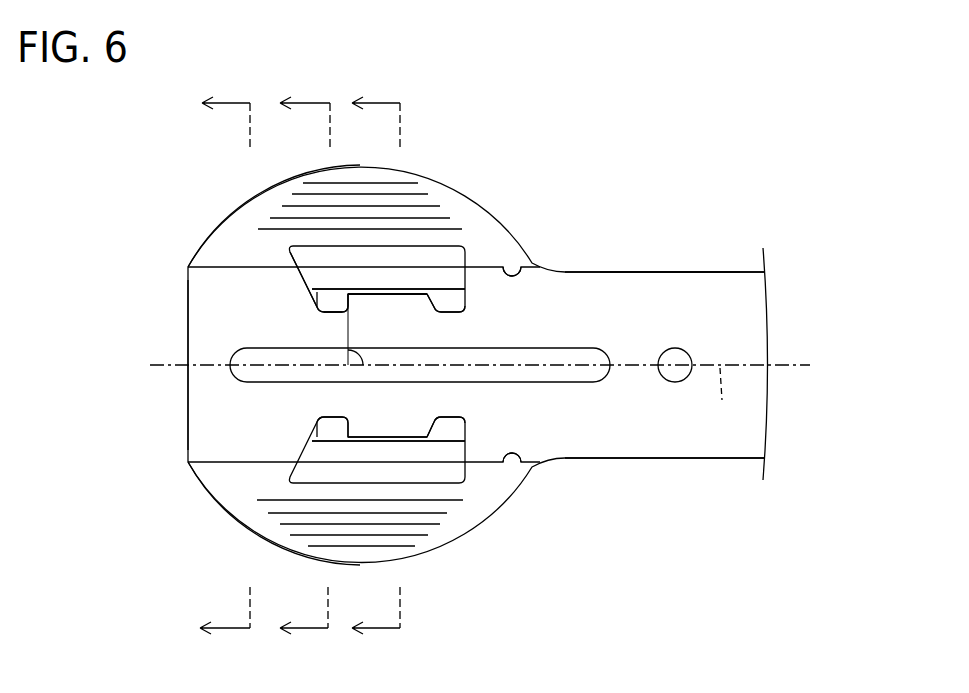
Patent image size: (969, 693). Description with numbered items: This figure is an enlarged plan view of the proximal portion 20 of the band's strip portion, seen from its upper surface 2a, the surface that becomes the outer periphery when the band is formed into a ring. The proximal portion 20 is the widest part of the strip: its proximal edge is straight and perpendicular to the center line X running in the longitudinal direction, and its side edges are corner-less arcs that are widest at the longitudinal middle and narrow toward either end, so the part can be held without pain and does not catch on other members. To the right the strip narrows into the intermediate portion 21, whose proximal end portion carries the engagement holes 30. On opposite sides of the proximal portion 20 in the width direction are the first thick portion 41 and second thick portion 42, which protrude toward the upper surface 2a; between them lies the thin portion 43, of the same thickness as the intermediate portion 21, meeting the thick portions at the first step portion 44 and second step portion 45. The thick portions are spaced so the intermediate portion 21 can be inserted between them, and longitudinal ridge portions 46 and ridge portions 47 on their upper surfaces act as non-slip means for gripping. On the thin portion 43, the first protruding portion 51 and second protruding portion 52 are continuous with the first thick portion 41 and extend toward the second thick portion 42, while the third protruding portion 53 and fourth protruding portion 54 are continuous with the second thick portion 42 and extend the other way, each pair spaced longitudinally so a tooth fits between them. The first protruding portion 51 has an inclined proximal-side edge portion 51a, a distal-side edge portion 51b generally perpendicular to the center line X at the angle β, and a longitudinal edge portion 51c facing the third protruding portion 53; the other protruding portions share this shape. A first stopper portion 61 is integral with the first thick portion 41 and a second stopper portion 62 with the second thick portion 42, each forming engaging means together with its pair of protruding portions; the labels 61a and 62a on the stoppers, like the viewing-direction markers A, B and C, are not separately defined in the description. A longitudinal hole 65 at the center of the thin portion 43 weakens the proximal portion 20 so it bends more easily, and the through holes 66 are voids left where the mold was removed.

The proximal portion 20 is at (419, 170).
The intermediate portion 21 is at (722, 270).
The upper surface 2a is at (673, 285).
The engagement hole 30 is at (680, 373).
The first thick portion 41 is at (230, 232).
The second thick portion 42 is at (230, 493).
The thin portion 43 is at (200, 302).
The first step portion 44 is at (522, 268).
The second step portion 45 is at (524, 460).
The ridge portions 46 is at (458, 229).
The ridge portions 47 is at (418, 537).
The first protruding portion 51 is at (317, 309).
The edge portion on the proximal end side 51a is at (313, 305).
The edge portion on the distal end side 51b is at (350, 300).
The edge portion opposing the third protruding portion 51c is at (337, 316).
The second protruding portion 52 is at (465, 302).
The third protruding portion 53 is at (317, 426).
The fourth protruding portion 54 is at (465, 430).
The first stopper portion 61 is at (337, 258).
The upper engaging block inner surface 61a is at (445, 282).
The second stopper portion 62 is at (376, 463).
The lower engaging block inner surface 62a is at (437, 445).
The hole (weakened portion) 65 is at (570, 382).
The through holes 66 is at (386, 294).
The center line X is at (723, 405).
The section A is at (225, 367).
The section B is at (305, 367).
The section C is at (376, 367).